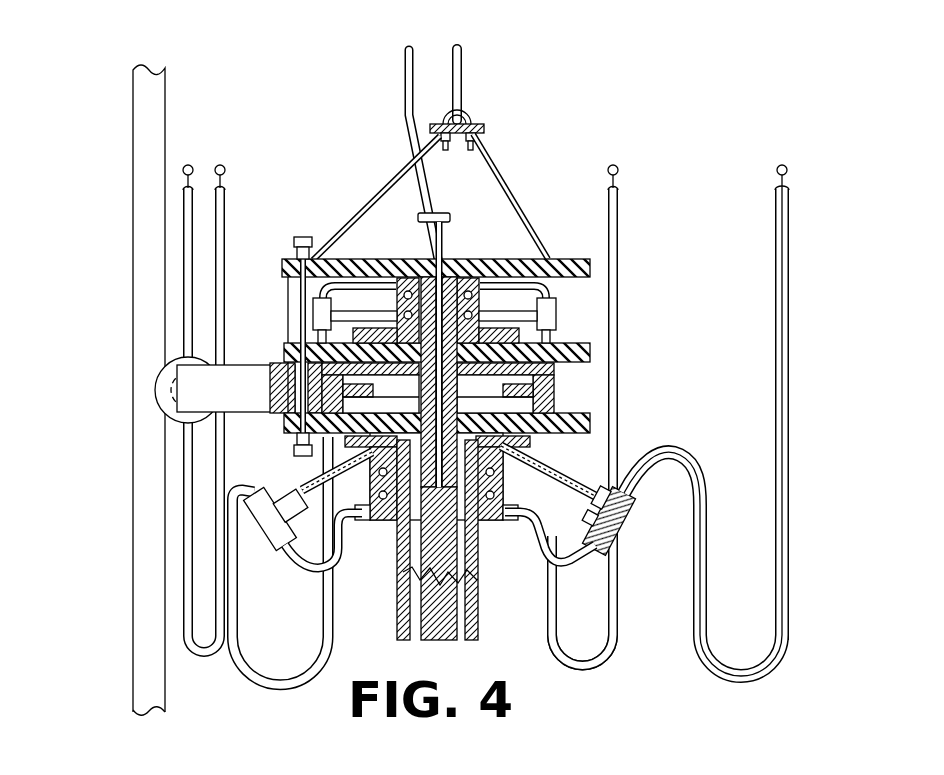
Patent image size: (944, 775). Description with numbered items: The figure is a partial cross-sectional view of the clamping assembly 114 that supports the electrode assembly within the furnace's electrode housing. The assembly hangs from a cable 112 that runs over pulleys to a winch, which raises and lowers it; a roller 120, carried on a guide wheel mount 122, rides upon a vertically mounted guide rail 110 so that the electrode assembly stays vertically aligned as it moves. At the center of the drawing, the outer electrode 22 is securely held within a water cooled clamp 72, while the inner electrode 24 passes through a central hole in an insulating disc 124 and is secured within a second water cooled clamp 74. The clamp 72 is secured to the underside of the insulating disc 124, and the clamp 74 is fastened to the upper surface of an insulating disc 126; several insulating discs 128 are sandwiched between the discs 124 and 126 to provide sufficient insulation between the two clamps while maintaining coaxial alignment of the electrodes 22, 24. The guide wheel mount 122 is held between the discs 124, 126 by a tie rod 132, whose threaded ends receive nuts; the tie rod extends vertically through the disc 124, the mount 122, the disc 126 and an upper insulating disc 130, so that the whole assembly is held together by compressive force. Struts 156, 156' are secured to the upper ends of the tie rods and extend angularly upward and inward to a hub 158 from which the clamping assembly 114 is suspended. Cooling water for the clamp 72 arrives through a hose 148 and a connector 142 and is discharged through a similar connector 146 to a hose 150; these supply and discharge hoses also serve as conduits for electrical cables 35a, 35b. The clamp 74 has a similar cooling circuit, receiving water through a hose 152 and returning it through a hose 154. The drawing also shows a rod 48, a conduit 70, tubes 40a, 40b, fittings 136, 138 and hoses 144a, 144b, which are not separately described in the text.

The outer electrode 22 is at (470, 580).
The inner electrode 24 is at (455, 640).
The electrical cable 35a is at (200, 150).
The electrical cable 35b is at (782, 166).
The tube 40a is at (615, 166).
The tube 40b is at (222, 165).
The rod 48 is at (446, 244).
The conduit 70 is at (405, 95).
The water cooled clamp 72 is at (378, 520).
The water cooled clamp 74 is at (364, 262).
The guide rail 110 is at (133, 135).
The cable 112 is at (462, 73).
The clamping assembly 114 is at (572, 128).
The roller 120 is at (155, 388).
The guide wheel mount 122 is at (177, 368).
The insulating disc 124 is at (590, 425).
The insulating disc 126 is at (590, 352).
The insulating discs 128 is at (578, 388).
The upper insulating disc 130 is at (590, 268).
The tie rod 132 is at (300, 240).
The fitting 136 is at (313, 303).
The fitting 138 is at (560, 306).
The connector 142 is at (630, 506).
The hose 144a is at (552, 546).
The hose 144b is at (338, 560).
The connector 146 is at (272, 538).
The hose 148 is at (792, 462).
The hose 150 is at (215, 659).
The hose 152 is at (554, 660).
The hose 154 is at (333, 636).
The strut 156 is at (376, 194).
The strut 156' is at (516, 193).
The hub 158 is at (476, 122).